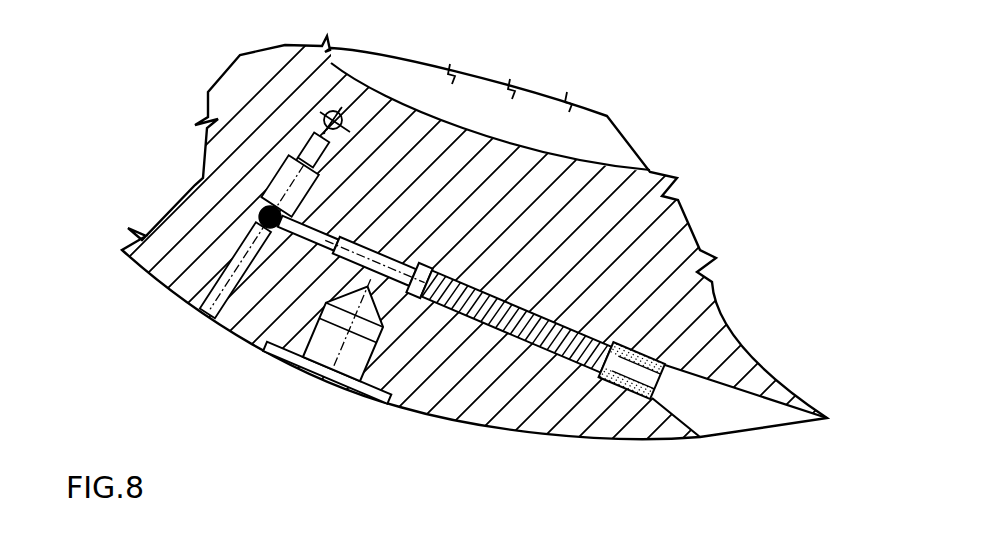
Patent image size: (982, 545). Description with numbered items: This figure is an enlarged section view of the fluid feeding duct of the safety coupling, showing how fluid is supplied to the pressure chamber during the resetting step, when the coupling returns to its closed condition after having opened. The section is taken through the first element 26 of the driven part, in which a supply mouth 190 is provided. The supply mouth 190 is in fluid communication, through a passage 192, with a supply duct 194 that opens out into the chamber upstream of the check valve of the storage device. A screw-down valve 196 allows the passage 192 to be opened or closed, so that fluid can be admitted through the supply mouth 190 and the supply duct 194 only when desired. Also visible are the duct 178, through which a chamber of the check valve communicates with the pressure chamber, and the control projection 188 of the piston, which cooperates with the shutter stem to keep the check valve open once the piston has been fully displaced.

The first element 26 is at (506, 412).
The duct 178 is at (345, 123).
The control projection 188 is at (258, 216).
The supply mouth 190 is at (322, 345).
The passage 192 is at (405, 298).
The supply duct 194 is at (512, 295).
The screw-down valve 196 is at (658, 400).